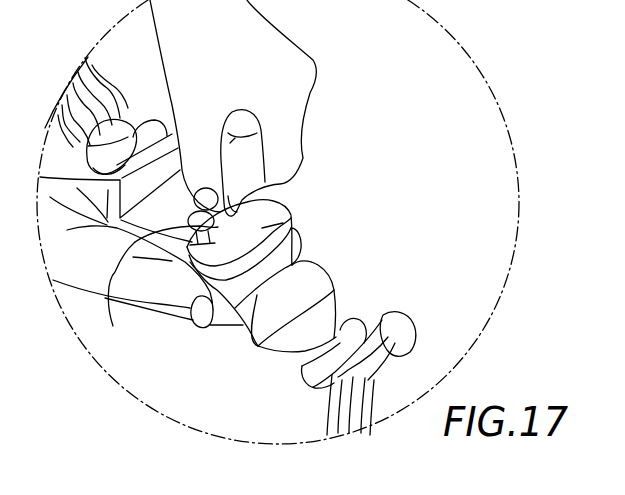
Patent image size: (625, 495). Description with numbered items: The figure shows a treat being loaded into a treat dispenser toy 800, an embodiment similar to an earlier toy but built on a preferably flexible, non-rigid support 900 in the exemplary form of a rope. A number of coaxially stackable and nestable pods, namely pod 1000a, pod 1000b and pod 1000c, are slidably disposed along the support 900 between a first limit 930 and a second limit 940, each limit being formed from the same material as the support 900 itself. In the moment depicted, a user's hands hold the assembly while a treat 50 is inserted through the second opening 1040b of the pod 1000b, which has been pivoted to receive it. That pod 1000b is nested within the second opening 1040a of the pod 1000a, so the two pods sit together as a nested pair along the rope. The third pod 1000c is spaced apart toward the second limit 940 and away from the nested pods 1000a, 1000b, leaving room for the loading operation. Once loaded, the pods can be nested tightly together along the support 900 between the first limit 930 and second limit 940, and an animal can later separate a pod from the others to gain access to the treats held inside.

The treat dispenser toy 800 is at (160, 364).
The support 900 is at (250, 330).
The first limit 930 is at (393, 333).
The second limit 940 is at (130, 120).
The treat 50 is at (203, 221).
The pod 1000a is at (310, 286).
The pod 1000b is at (262, 228).
The pod 1000c is at (178, 143).
The second opening 1040a is at (300, 270).
The second opening 1040b is at (141, 262).